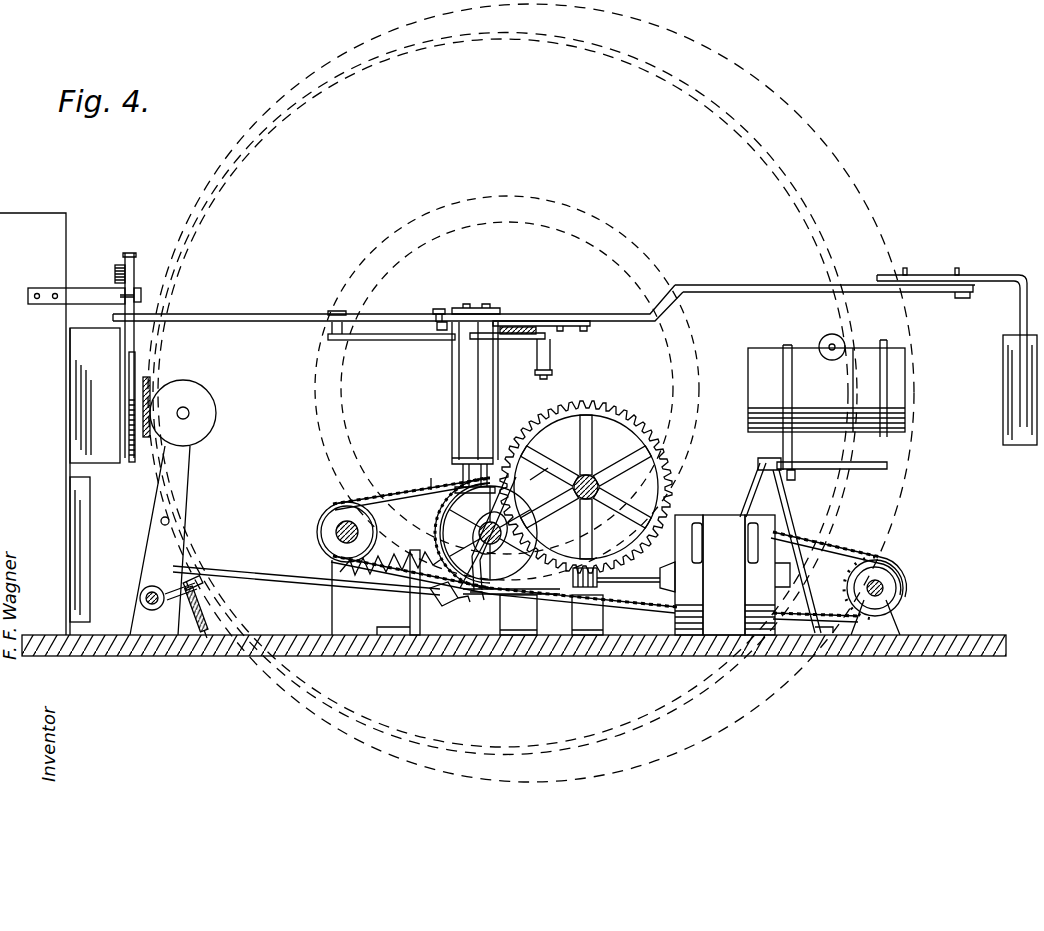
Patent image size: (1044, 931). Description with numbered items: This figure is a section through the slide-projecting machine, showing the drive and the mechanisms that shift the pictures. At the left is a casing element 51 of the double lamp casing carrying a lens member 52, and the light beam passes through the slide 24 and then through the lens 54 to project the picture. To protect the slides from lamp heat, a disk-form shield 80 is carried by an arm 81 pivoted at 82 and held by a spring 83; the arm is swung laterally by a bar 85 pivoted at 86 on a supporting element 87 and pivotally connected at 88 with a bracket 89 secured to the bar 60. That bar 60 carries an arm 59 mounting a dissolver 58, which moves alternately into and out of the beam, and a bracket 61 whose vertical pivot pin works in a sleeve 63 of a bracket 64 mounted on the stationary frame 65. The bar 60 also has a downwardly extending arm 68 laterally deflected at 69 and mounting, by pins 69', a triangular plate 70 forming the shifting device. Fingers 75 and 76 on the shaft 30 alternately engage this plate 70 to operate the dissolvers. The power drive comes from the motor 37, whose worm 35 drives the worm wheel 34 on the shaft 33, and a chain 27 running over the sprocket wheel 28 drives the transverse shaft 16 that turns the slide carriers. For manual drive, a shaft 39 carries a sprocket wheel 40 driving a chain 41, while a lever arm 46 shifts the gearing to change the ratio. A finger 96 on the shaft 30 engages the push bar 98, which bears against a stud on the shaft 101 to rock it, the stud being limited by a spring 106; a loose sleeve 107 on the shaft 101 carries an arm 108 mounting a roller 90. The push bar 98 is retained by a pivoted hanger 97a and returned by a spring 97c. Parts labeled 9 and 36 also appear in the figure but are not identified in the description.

The casing element 51 is at (35, 424).
The lens member 52 is at (80, 353).
The spring 83 is at (115, 274).
The arm 81 is at (137, 262).
The pivot 82 is at (142, 293).
The shield 80 is at (128, 405).
The slide 24 is at (150, 382).
The roller 90 is at (217, 415).
The arm 108 is at (180, 470).
The shaft 101 is at (142, 592).
The loose sleeve 107 is at (200, 575).
The spring 106 is at (196, 637).
The push bar 98 is at (306, 585).
The bar 85 is at (270, 312).
The bar 60 is at (732, 285).
The arm 59 is at (978, 275).
The dissolver 58 is at (1003, 373).
The pivot 86 is at (333, 310).
The supporting element 87 is at (380, 340).
The pivotal connection 88 is at (438, 308).
The bracket 89 is at (458, 308).
The downwardly extending arm 68 is at (452, 380).
The stationary frame 65 is at (498, 358).
The bracket 64 is at (552, 338).
The sleeve 63 is at (555, 360).
The bracket 61 is at (573, 318).
The pins 69' is at (437, 428).
The lateral deflection 69 is at (478, 391).
The plate 70 is at (497, 470).
The worm wheel 34 is at (618, 410).
The shaft 33 is at (596, 477).
The finger 76 is at (532, 470).
The shaft 30 is at (481, 527).
The finger 96 is at (473, 562).
The sprocket wheel 28 is at (336, 510).
The transverse shaft 16 is at (337, 531).
The chain 27 is at (399, 486).
The chain 36 is at (626, 604).
The spring 97c is at (396, 548).
The hanger 97a is at (441, 600).
The frame plate 9 is at (431, 478).
The finger 75 is at (476, 594).
The lever arm 46 is at (514, 596).
The worm 35 is at (586, 594).
The motor 37 is at (732, 575).
The chain 41 is at (849, 548).
The sprocket wheel 40 is at (899, 569).
The shaft 39 is at (884, 588).
The lens 54 is at (810, 346).